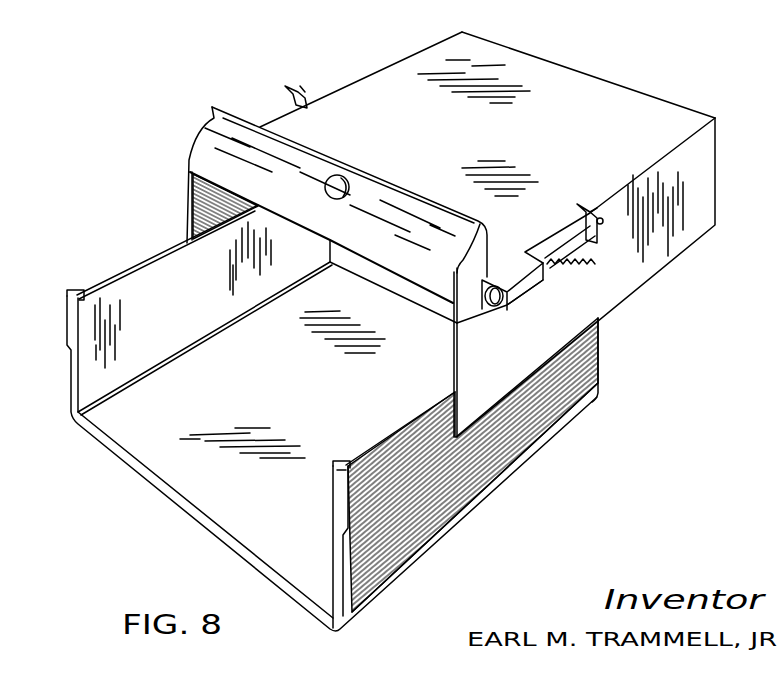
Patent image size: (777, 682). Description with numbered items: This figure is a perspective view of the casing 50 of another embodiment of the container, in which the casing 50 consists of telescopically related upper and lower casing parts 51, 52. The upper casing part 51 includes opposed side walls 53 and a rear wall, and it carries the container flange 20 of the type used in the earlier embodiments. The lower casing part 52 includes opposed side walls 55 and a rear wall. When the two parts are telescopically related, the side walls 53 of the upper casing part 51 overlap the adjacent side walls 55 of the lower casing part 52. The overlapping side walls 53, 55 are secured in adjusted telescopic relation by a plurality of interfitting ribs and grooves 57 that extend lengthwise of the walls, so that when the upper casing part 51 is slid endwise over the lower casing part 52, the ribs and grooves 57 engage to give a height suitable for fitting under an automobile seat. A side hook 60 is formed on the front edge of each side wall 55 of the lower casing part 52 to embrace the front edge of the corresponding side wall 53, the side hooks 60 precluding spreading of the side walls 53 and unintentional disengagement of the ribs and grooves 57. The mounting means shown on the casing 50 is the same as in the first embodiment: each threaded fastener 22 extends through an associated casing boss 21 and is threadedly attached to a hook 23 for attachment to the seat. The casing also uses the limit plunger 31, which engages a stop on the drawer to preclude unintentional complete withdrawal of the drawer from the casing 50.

The container flange 20 is at (417, 193).
The casing boss 21 is at (508, 303).
The threaded fastener 22 is at (560, 258).
The hook 23 is at (293, 88).
The limit plunger 31 is at (344, 176).
The casing 50 is at (445, 232).
The upper casing part 51 is at (612, 86).
The lower casing part 52 is at (148, 481).
The side walls 53 is at (188, 192).
The side walls 55 is at (115, 277).
The ribs and grooves 57 is at (410, 432).
The side hook 60 is at (66, 317).